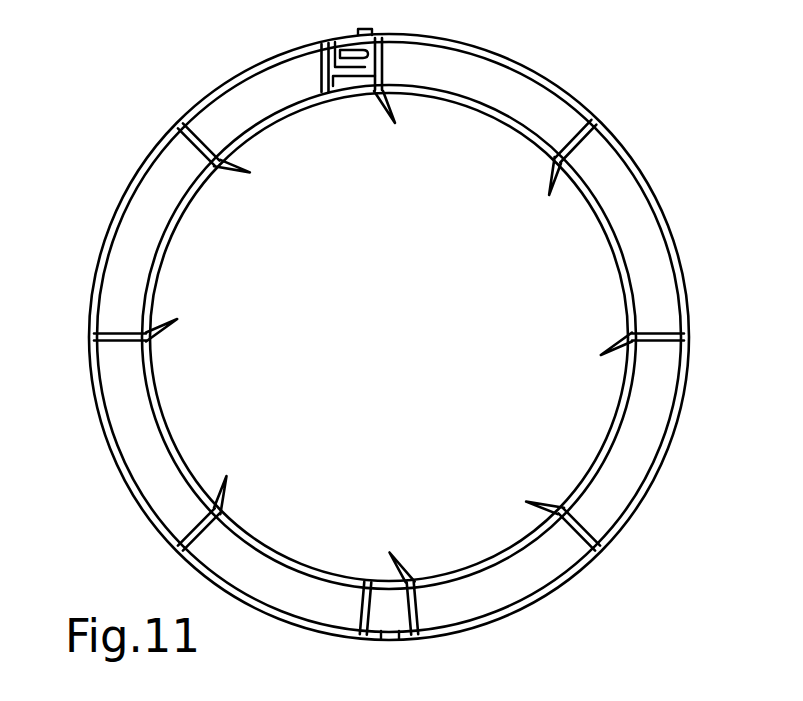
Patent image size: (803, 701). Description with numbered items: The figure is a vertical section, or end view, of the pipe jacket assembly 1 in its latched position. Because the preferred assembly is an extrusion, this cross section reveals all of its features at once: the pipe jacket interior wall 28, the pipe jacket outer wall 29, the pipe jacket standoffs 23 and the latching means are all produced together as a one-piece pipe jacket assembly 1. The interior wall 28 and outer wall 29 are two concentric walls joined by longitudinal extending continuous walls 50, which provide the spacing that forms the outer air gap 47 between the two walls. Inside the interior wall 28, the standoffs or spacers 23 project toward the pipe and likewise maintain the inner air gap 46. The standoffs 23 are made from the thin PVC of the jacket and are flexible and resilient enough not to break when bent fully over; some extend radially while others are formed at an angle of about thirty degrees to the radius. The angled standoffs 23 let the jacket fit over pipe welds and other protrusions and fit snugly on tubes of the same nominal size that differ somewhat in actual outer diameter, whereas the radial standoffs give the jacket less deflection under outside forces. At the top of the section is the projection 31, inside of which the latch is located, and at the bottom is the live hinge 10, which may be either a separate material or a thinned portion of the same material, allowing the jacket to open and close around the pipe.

The pipe jacket assembly 1 is at (170, 96).
The live hinge 10 is at (388, 641).
The pipe jacket standoffs 23 is at (228, 178).
The pipe jacket interior wall 28 is at (163, 413).
The pipe jacket outer wall 29 is at (96, 412).
The projection 31 is at (352, 36).
The inner air gap 46 is at (603, 402).
The outer air gap 47 is at (633, 465).
The longitudinal extending continuous walls 50 is at (385, 63).